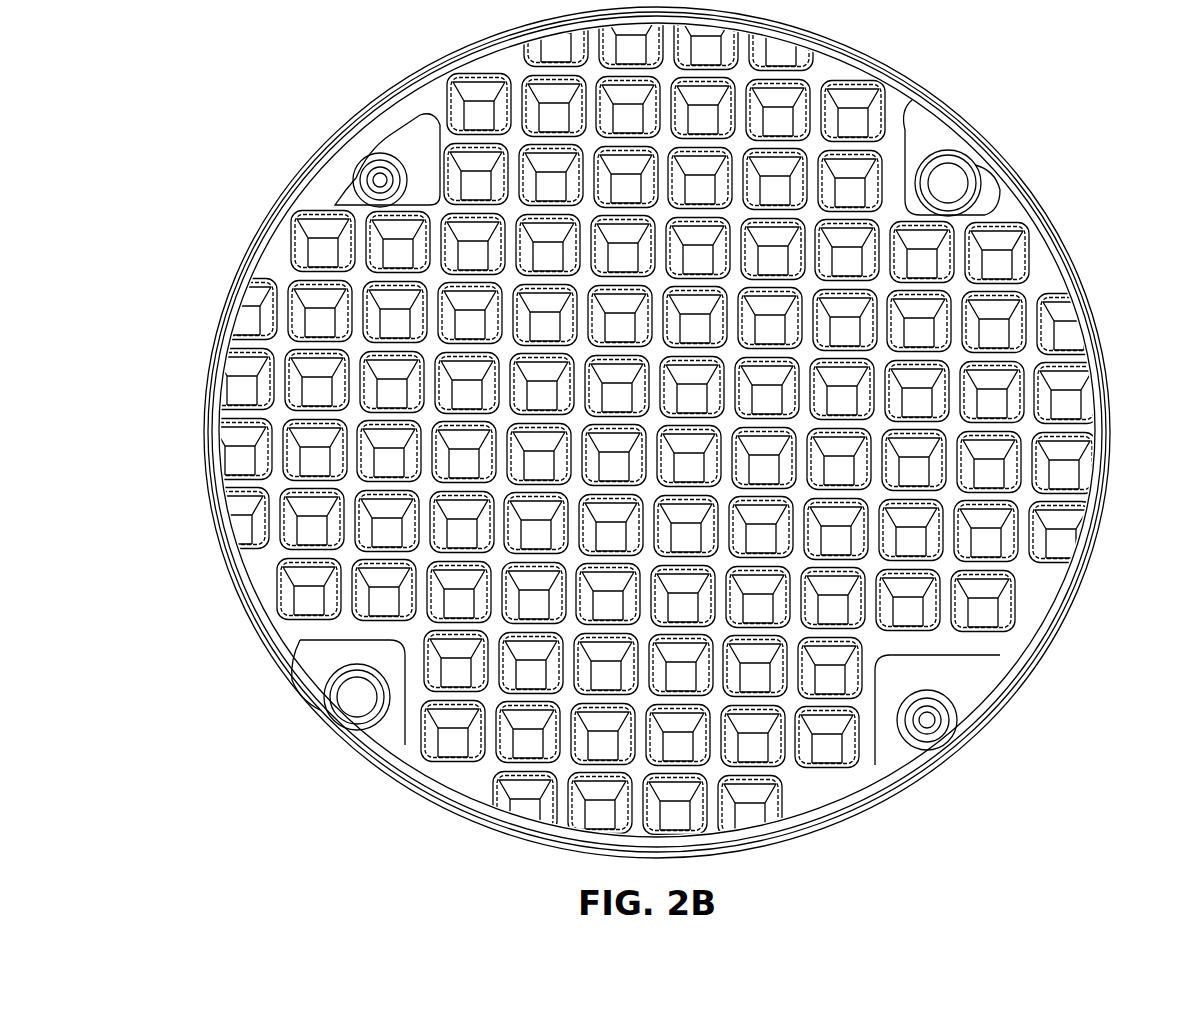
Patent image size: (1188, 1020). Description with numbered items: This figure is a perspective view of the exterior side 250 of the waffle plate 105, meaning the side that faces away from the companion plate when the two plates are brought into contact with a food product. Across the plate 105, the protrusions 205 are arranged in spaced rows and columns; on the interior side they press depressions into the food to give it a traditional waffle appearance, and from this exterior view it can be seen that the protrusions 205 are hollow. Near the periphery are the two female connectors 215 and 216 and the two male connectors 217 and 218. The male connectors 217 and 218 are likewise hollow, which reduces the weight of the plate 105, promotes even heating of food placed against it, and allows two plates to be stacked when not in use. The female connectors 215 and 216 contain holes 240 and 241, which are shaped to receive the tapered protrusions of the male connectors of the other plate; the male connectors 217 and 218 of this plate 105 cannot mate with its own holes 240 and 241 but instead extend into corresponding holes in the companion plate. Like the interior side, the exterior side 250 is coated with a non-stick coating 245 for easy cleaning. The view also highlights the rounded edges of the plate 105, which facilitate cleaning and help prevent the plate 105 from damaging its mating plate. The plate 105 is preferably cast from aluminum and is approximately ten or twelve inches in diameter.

The plate 105 is at (150, 185).
The protrusions 205 is at (928, 398).
The female connector 215 is at (978, 195).
The female connector 216 is at (332, 684).
The male connector 217 is at (375, 175).
The male connector 218 is at (946, 707).
The hole 240 is at (952, 163).
The hole 241 is at (357, 708).
The non-stick coating 245 is at (280, 418).
The exterior side 250 is at (285, 345).